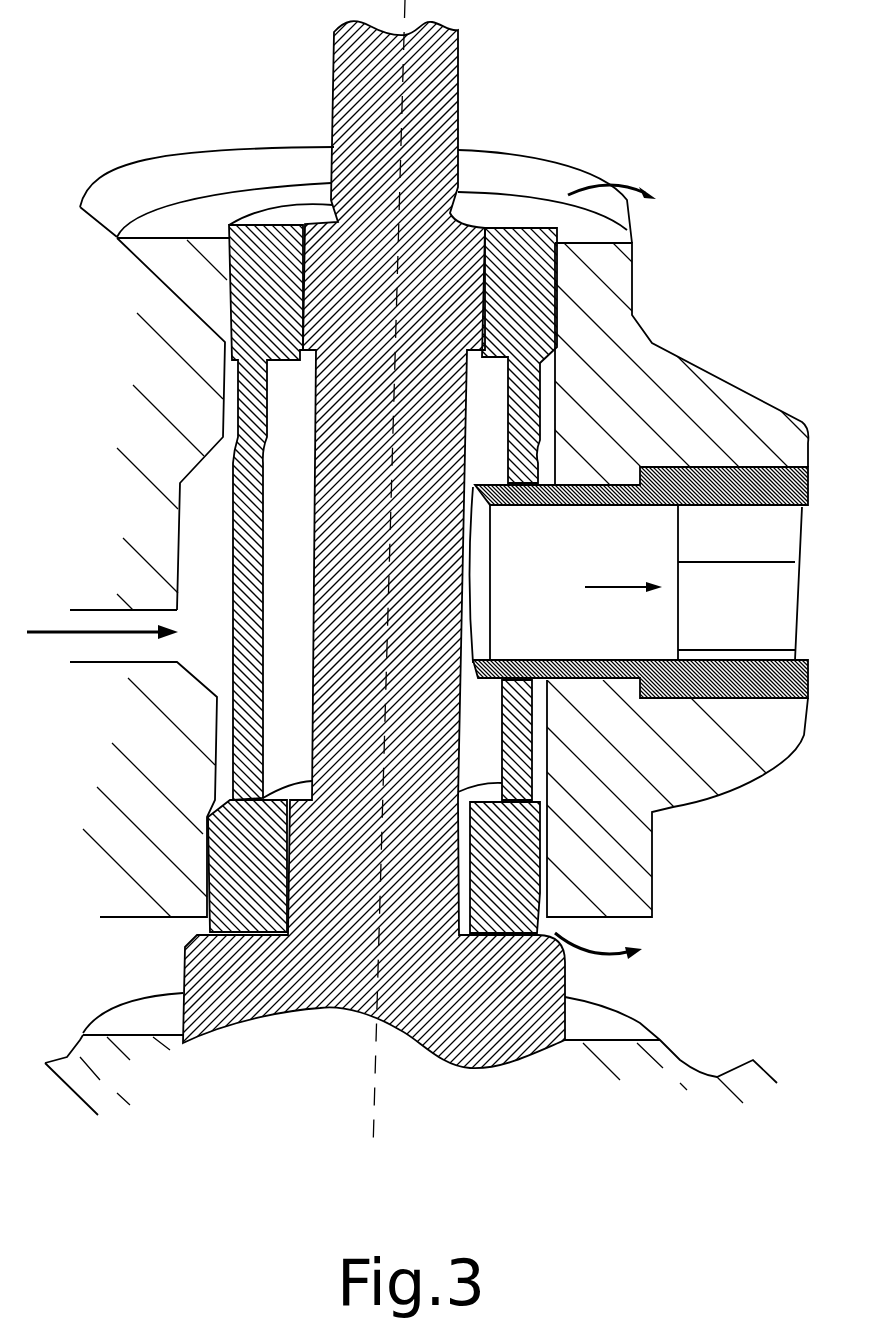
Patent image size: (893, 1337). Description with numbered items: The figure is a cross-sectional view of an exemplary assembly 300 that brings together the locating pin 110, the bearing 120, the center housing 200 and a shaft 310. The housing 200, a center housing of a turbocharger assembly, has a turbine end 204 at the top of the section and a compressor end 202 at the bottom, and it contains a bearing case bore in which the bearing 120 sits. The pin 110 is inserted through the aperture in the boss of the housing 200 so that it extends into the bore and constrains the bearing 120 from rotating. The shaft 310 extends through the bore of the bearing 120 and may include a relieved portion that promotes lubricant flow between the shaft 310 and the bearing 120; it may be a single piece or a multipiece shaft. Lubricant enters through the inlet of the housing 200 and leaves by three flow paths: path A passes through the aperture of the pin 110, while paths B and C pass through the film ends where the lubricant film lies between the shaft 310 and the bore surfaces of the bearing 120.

The assembly 300 is at (172, 106).
The shaft 310 is at (415, 305).
The bearing 120 is at (290, 293).
The locating pin 110 is at (735, 498).
The housing 200 is at (133, 509).
The turbine end 204 is at (500, 105).
The compressor end 202 is at (252, 1112).